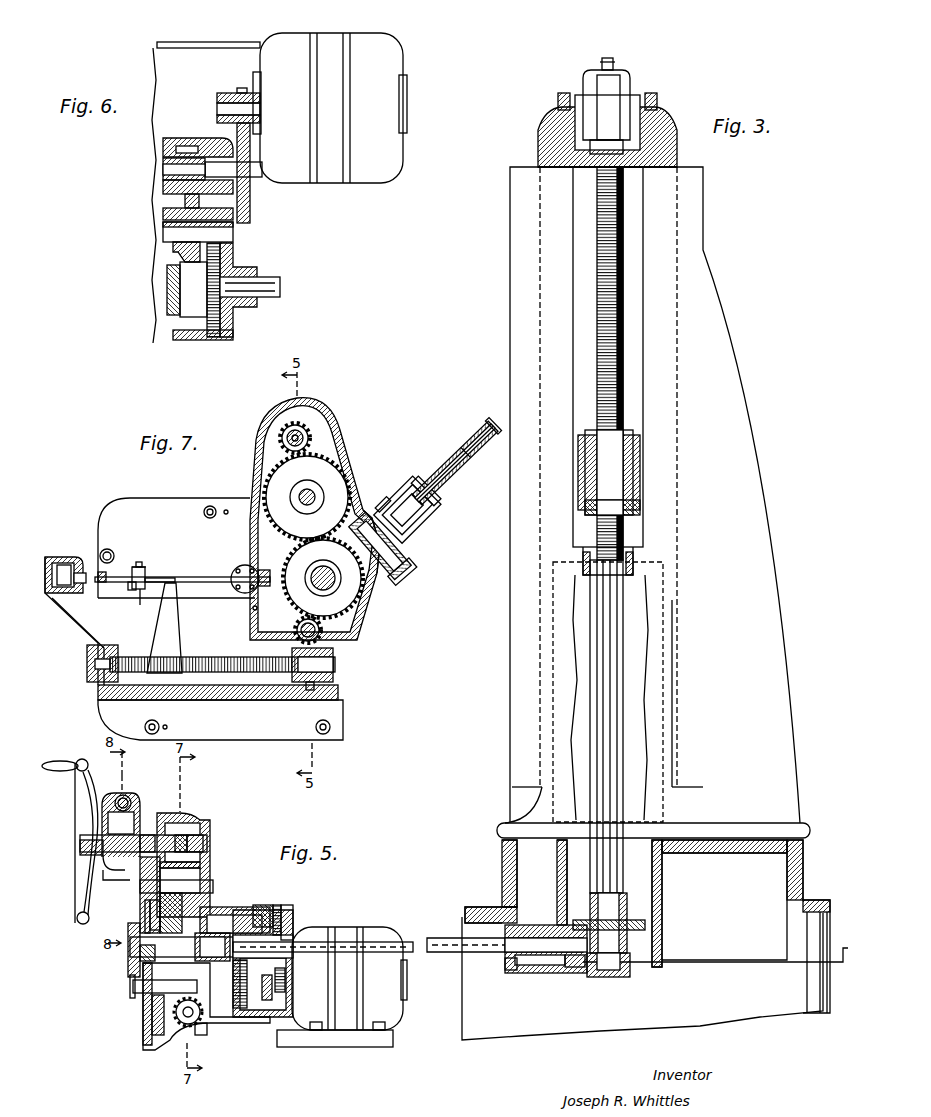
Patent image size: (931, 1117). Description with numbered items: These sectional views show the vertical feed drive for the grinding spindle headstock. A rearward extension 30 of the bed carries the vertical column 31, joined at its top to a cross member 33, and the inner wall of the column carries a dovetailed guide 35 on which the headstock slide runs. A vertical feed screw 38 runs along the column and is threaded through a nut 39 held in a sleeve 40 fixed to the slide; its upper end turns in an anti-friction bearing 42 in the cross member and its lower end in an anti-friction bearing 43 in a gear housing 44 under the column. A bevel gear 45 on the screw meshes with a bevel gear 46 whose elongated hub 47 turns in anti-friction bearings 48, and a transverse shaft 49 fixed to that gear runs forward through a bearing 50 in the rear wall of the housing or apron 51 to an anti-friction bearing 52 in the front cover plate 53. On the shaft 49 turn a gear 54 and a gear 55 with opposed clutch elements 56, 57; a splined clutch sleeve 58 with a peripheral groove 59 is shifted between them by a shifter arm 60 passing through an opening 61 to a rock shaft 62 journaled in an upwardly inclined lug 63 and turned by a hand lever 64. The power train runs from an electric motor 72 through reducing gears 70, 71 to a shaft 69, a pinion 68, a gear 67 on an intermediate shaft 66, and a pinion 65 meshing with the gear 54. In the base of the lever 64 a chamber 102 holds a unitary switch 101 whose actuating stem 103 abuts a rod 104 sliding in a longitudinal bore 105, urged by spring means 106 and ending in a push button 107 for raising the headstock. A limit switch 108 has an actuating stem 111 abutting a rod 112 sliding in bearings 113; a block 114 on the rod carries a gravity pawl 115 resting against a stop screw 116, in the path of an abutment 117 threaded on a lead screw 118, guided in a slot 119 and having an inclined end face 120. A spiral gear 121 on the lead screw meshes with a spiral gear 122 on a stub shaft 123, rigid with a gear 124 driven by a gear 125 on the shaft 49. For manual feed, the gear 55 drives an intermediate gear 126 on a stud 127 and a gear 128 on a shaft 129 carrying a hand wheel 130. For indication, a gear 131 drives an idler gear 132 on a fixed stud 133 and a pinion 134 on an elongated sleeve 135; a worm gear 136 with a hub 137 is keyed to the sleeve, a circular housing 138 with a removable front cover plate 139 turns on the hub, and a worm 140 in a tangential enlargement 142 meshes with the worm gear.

In FIG. 3, the rearward extension 30 is at (803, 862).
In FIG. 3, the vertical column 31 is at (735, 362).
In FIG. 3, the cross member 33 is at (672, 145).
In FIG. 3, the dovetailed guide 35 is at (543, 230).
In FIG. 3, the vertical feed screw 38 is at (625, 330).
In FIG. 3, the nut 39 is at (640, 465).
In FIG. 3, the sleeve 40 is at (640, 482).
In FIG. 3, the anti-friction bearing 42 is at (633, 92).
In FIG. 3, the anti-friction bearing 43 is at (620, 977).
In FIG. 3, the gear housing 44 is at (648, 925).
In FIG. 3, the bevel gear 45 is at (630, 905).
In FIG. 3, the bevel gear 46 is at (575, 973).
In FIG. 3, the elongated hub 47 is at (540, 973).
In FIG. 3, the anti-friction bearings 48 is at (512, 973).
In FIG. 7, the transverse shaft 49 is at (336, 580).
In FIG. 5, the transverse shaft 49 is at (415, 942).
In FIG. 3, the transverse shaft 49 is at (501, 932).
In FIG. 5, the bearing 50 is at (290, 925).
In FIG. 5, the housing or apron 51 is at (266, 1020).
In FIG. 5, the anti-friction bearing 52 is at (128, 960).
In FIG. 7, the front cover plate 53 is at (338, 710).
In FIG. 5, the front cover plate 53 is at (143, 1008).
In FIG. 6, the gear 54 is at (236, 265).
In FIG. 5, the gear 54 is at (278, 905).
In FIG. 7, the gear 55 is at (355, 590).
In FIG. 5, the gear 55 is at (176, 902).
In FIG. 6, the clutch element 56 is at (181, 332).
In FIG. 5, the clutch element 56 is at (262, 905).
In FIG. 5, the clutch element 57 is at (215, 920).
In FIG. 6, the clutch sleeve 58 is at (170, 300).
In FIG. 5, the clutch sleeve 58 is at (210, 940).
In FIG. 5, the peripheral groove 59 is at (240, 975).
In FIG. 7, the shifter arm 60 is at (371, 527).
In FIG. 7, the opening 61 is at (368, 512).
In FIG. 7, the rock shaft 62 is at (410, 560).
In FIG. 7, the upwardly inclined lug 63 is at (402, 548).
In FIG. 7, the hand lever 64 is at (475, 440).
In FIG. 6, the pinion 65 is at (238, 209).
In FIG. 5, the pinion 65 is at (285, 985).
In FIG. 6, the intermediate shaft 66 is at (165, 229).
In FIG. 6, the gear 67 is at (176, 254).
In FIG. 5, the gear 67 is at (250, 1010).
In FIG. 6, the pinion 68 is at (191, 146).
In FIG. 6, the shaft 69 is at (164, 170).
In FIG. 6, the reducing gear 70 is at (251, 194).
In FIG. 5, the reducing gear 70 is at (290, 910).
In FIG. 6, the reducing gear 71 is at (241, 87).
In FIG. 6, the electric motor 72 is at (363, 38).
In FIG. 5, the electric motor 72 is at (382, 928).
In FIG. 7, the unitary switch 101 is at (415, 518).
In FIG. 7, the chamber 102 is at (420, 530).
In FIG. 7, the actuating stem 103 is at (403, 495).
In FIG. 7, the rod 104 is at (452, 462).
In FIG. 7, the longitudinal bore 105 is at (465, 470).
In FIG. 7, the spring means 106 is at (435, 503).
In FIG. 7, the push button 107 is at (494, 423).
In FIG. 7, the switch 108 is at (58, 563).
In FIG. 7, the actuating stem 111 is at (80, 560).
In FIG. 7, the rod 112 is at (205, 576).
In FIG. 7, the bearings 113 is at (112, 570).
In FIG. 7, the block 114 is at (142, 566).
In FIG. 7, the gravity pawl 115 is at (140, 592).
In FIG. 7, the stop screw 116 is at (128, 586).
In FIG. 7, the abutment 117 is at (172, 619).
In FIG. 7, the lead screw 118 is at (245, 673).
In FIG. 5, the lead screw 118 is at (203, 1017).
In FIG. 7, the slot 119 is at (222, 575).
In FIG. 7, the inclined end face 120 is at (165, 578).
In FIG. 7, the spiral gear 121 is at (298, 680).
In FIG. 5, the spiral gear 121 is at (180, 1035).
In FIG. 7, the spiral gear 122 is at (295, 632).
In FIG. 5, the spiral gear 122 is at (172, 1020).
In FIG. 7, the stub shaft 123 is at (345, 655).
In FIG. 5, the stub shaft 123 is at (133, 988).
In FIG. 5, the gear 124 is at (150, 1025).
In FIG. 5, the gear 125 is at (140, 948).
In FIG. 7, the intermediate gear 126 is at (330, 468).
In FIG. 5, the intermediate gear 126 is at (200, 862).
In FIG. 7, the stud 127 is at (300, 493).
In FIG. 5, the stud 127 is at (180, 880).
In FIG. 7, the gear 128 is at (303, 428).
In FIG. 5, the gear 128 is at (196, 823).
In FIG. 7, the shaft 129 is at (283, 433).
In FIG. 5, the shaft 129 is at (205, 840).
In FIG. 5, the hand wheel 130 is at (74, 800).
In FIG. 5, the gear 131 is at (145, 925).
In FIG. 5, the idler gear 132 is at (150, 910).
In FIG. 5, the fixed stud 133 is at (160, 897).
In FIG. 5, the pinion 134 is at (190, 815).
In FIG. 5, the elongated sleeve 135 is at (80, 848).
In FIG. 5, the worm gear 136 is at (138, 815).
In FIG. 5, the hub 137 is at (145, 832).
In FIG. 5, the circular housing 138 is at (110, 880).
In FIG. 5, the removable front cover plate 139 is at (103, 865).
In FIG. 5, the worm 140 is at (128, 797).
In FIG. 5, the tangential enlargement 142 is at (112, 795).